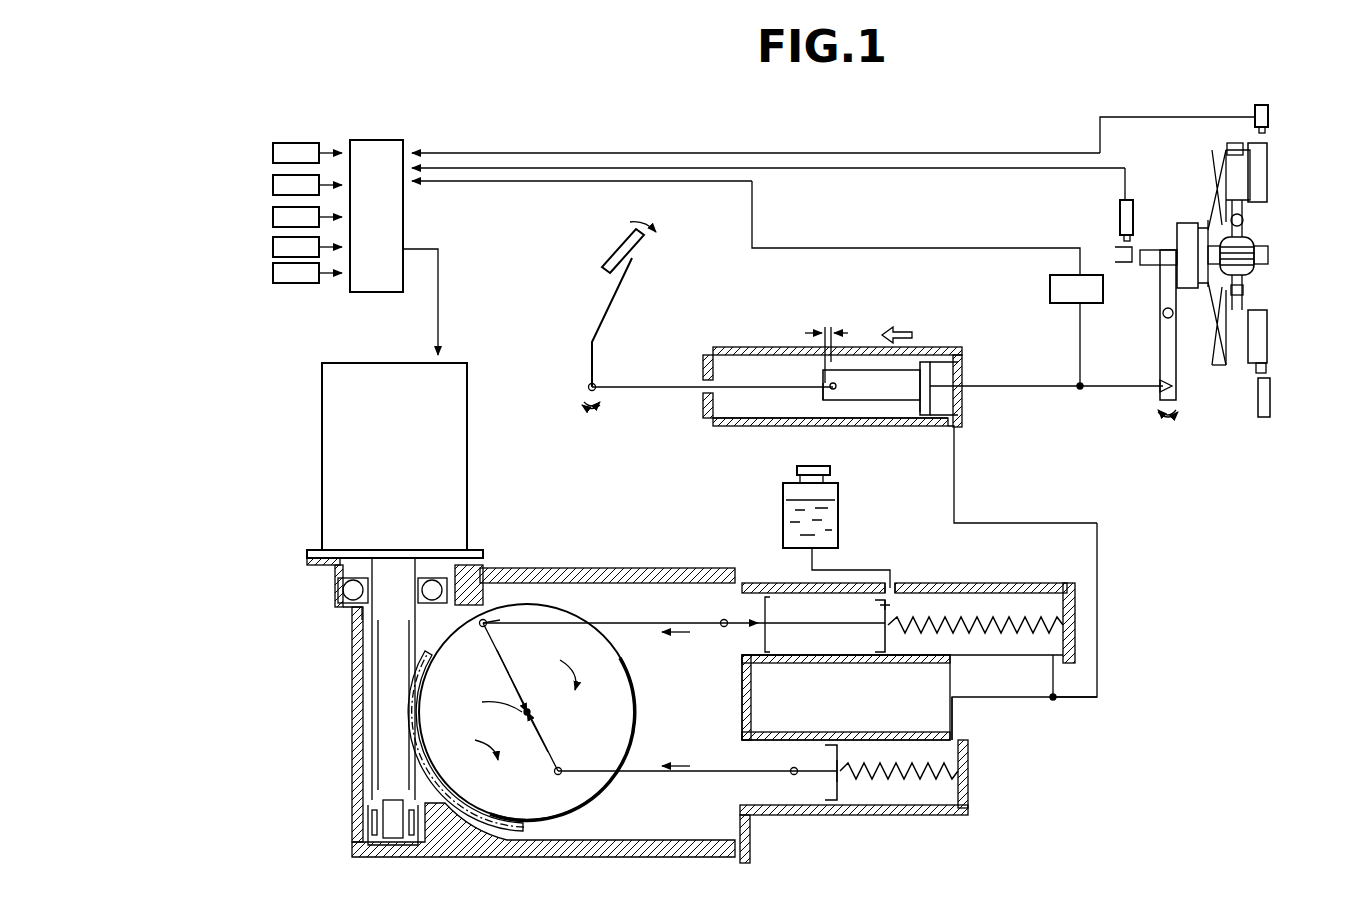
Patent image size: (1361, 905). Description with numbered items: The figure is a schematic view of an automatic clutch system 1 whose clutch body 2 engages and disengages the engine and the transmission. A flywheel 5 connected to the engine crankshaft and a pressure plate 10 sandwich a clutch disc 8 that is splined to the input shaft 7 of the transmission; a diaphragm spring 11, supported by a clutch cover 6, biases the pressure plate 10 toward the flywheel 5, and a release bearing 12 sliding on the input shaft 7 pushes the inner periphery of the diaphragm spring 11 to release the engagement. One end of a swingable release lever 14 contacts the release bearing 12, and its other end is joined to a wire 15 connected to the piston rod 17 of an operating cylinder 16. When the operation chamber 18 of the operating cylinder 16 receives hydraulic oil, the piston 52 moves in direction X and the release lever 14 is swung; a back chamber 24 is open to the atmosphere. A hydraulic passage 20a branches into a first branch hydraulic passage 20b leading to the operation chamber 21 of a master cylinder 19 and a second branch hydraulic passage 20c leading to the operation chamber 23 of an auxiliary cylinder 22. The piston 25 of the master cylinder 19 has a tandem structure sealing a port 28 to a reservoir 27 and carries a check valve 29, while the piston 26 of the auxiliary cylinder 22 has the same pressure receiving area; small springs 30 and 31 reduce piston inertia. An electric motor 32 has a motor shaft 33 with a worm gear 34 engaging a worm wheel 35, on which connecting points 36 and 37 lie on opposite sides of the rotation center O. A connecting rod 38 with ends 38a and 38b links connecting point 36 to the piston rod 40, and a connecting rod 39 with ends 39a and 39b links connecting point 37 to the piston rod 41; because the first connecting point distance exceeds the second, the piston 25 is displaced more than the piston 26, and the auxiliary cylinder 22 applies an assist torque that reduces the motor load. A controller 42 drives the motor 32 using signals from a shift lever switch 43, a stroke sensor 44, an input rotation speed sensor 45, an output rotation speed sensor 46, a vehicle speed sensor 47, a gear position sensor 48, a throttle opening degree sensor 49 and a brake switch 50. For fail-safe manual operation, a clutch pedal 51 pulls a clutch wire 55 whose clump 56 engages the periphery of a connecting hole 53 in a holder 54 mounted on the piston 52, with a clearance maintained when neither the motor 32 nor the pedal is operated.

The automatic clutch system 1 is at (922, 147).
The clutch body 2 is at (1272, 212).
The flywheel 5 is at (1270, 172).
The clutch cover 6 is at (1210, 355).
The input shaft 7 is at (1150, 250).
The clutch disc 8 is at (1248, 292).
The pressure plate 10 is at (1240, 345).
The diaphragm spring 11 is at (1210, 200).
The release bearing 12 is at (1186, 222).
The release lever 14 is at (1160, 285).
The wire 15 is at (1112, 390).
The operating cylinder 16 is at (760, 345).
The piston rod 17 is at (1020, 384).
The operation chamber 18 is at (962, 360).
The master cylinder 19 is at (962, 582).
The hydraulic passage 20a is at (1020, 522).
The first branch hydraulic passage 20b is at (1058, 700).
The second branch hydraulic passage 20c is at (995, 700).
The operation chamber 21 is at (995, 605).
The auxiliary cylinder 22 is at (868, 728).
The operation chamber 23 is at (945, 795).
The back chamber 24 is at (748, 420).
The piston 25 is at (888, 640).
The piston 26 is at (840, 785).
The reservoir 27 is at (838, 518).
The port 28 is at (890, 585).
The check valve 29 is at (890, 605).
The spring 30 is at (1040, 620).
The spring 31 is at (905, 780).
The electric motor 32 is at (322, 440).
The motor shaft 33 is at (372, 600).
The worm gear 34 is at (352, 722).
The worm wheel 35 is at (580, 795).
The connecting point 36 is at (490, 620).
The connecting point 37 is at (562, 775).
The connecting rod 38 is at (624, 620).
The end 38a is at (497, 615).
The end 38b is at (722, 618).
The connecting rod 39 is at (665, 775).
The end 39a is at (530, 828).
The end 39b is at (793, 778).
The piston rod 40 is at (752, 620).
The piston rod 41 is at (815, 775).
The controller 42 is at (405, 138).
The shift lever switch 43 is at (272, 152).
The stroke sensor 44 is at (1050, 290).
The input rotation speed sensor 45 is at (1270, 115).
The output rotation speed sensor 46 is at (1118, 215).
The vehicle speed sensor 47 is at (272, 184).
The gear position sensor 48 is at (272, 216).
The throttle opening degree sensor 49 is at (272, 246).
The brake switch 50 is at (272, 273).
The clutch pedal 51 is at (614, 243).
The piston 52 is at (922, 368).
The connecting hole 53 is at (820, 400).
The holder 54 is at (898, 405).
The clutch wire 55 is at (656, 383).
The clump 56 is at (838, 392).